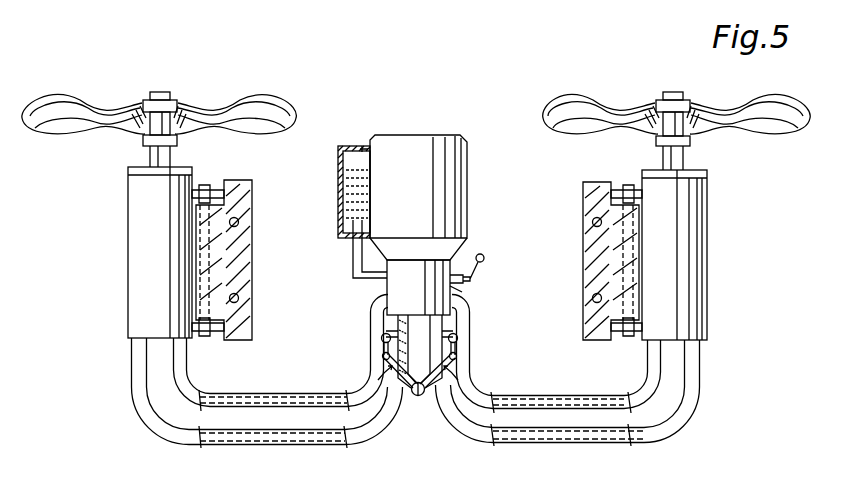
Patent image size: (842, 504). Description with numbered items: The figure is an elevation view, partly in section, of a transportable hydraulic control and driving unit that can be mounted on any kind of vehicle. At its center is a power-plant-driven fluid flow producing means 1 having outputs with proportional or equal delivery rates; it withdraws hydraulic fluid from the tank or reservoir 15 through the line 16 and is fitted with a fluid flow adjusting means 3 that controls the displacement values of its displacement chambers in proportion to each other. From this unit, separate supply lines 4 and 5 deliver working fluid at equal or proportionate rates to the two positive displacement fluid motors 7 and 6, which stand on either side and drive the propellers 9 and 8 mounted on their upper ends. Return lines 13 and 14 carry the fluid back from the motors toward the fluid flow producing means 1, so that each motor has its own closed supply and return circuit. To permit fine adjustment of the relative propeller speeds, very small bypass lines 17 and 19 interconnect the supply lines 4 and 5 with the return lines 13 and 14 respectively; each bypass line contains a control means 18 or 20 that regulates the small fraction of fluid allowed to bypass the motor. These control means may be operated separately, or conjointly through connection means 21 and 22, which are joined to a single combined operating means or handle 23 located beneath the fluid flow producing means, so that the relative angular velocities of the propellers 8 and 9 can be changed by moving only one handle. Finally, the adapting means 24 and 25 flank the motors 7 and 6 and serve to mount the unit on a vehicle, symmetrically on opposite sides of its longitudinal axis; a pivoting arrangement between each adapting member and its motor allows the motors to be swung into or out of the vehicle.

The fluid flow producing means 1 is at (395, 150).
The fluid flow adjusting means 3 is at (481, 255).
The supply line 4 is at (603, 398).
The supply line 5 is at (226, 396).
The positive displacement fluid motor 6 is at (142, 232).
The positive displacement fluid motor 7 is at (686, 315).
The propeller 8 is at (60, 104).
The propeller 9 is at (590, 106).
The return line 13 is at (608, 446).
The return line 14 is at (223, 447).
The tank or reservoir 15 is at (348, 191).
The line 16 is at (352, 263).
The bypass line 17 is at (458, 341).
The control means 18 is at (455, 332).
The bypass line 19 is at (384, 332).
The control means 20 is at (381, 341).
The connection means 21 is at (456, 355).
The connection means 22 is at (384, 355).
The combined operating means 23 is at (418, 397).
The adapting means 24 is at (594, 257).
The adapting means 25 is at (238, 255).